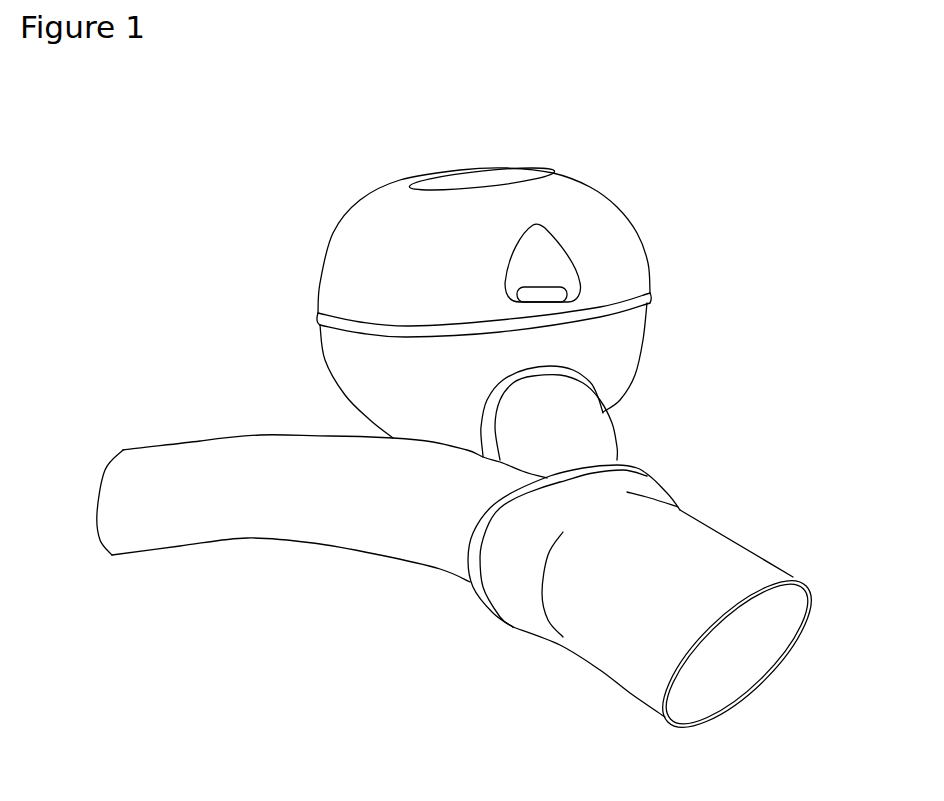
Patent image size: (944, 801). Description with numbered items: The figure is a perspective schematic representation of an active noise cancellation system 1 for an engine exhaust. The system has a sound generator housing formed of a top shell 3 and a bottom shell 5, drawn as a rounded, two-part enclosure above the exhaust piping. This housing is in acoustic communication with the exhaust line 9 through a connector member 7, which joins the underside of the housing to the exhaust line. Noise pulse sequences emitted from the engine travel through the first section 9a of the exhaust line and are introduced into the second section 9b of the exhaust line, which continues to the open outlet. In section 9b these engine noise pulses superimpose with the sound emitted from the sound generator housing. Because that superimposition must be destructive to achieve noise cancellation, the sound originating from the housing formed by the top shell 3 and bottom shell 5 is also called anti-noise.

The active noise cancellation system 1 is at (210, 252).
The top shell 3 is at (598, 208).
The bottom shell 5 is at (617, 342).
The connector member 7 is at (600, 445).
The exhaust line 9 is at (393, 540).
The section of the exhaust line 9a is at (225, 460).
The section of the exhaust line 9b is at (682, 582).